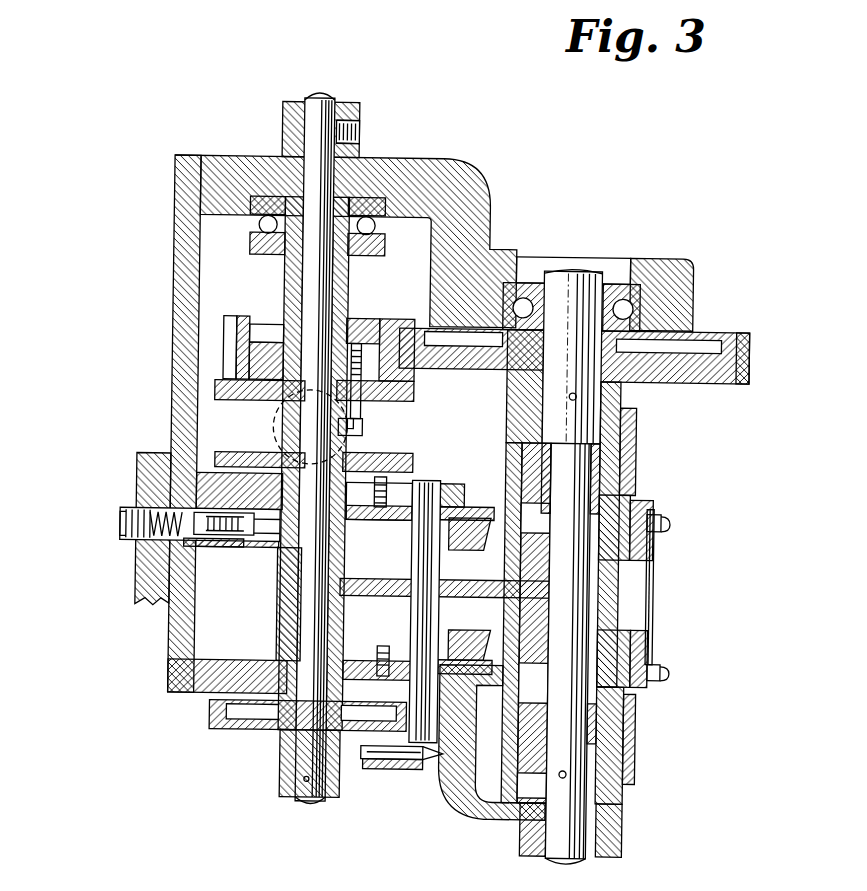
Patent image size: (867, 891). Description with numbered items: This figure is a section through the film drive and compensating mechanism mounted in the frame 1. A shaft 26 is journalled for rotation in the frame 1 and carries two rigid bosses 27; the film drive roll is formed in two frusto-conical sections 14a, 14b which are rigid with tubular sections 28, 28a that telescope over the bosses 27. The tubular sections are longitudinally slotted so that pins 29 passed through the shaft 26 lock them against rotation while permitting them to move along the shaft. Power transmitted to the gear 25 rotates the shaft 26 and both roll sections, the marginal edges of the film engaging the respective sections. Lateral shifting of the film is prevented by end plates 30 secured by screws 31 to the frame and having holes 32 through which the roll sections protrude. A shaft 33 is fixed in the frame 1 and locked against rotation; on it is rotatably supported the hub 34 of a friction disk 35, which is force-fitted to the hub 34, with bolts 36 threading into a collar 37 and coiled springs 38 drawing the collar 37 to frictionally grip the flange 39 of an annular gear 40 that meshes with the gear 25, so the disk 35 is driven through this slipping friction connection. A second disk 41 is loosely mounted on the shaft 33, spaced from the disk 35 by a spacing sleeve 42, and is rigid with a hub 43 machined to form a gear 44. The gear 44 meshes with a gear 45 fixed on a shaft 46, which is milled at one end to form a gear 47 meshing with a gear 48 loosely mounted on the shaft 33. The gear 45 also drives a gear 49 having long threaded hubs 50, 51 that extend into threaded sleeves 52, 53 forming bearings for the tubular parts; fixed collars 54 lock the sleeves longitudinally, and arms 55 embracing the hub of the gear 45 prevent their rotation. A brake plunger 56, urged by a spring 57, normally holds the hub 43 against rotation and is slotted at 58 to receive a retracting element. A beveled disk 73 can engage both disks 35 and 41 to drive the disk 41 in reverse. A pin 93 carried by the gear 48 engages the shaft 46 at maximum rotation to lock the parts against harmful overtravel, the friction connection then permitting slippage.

The frame 1 is at (455, 160).
The film drive roll section 14a is at (652, 500).
The film drive roll section 14b is at (648, 652).
The gear 25 is at (753, 378).
The shaft 26 is at (572, 270).
The boss 27 is at (628, 410).
The tubular section 28 is at (636, 455).
The tubular section 28a is at (640, 722).
The pin 29 is at (574, 397).
The end plate 30 is at (672, 509).
The screw 31 is at (395, 462).
The hole 32 is at (657, 512).
The shaft 33 is at (333, 93).
The hub 34 is at (345, 292).
The friction disk 35 is at (400, 404).
The bolt 36 is at (366, 318).
The collar 37 is at (275, 318).
The coiled spring 38 is at (365, 427).
The flange 39 is at (401, 338).
The annular gear 40 is at (240, 310).
The second disk 41 is at (222, 448).
The spacing sleeve 42 is at (295, 416).
The hub 43 is at (357, 520).
The gear 44 is at (283, 600).
The gear 45 is at (385, 579).
The shaft 46 is at (437, 480).
The gear 47 is at (440, 762).
The gear 48 is at (225, 735).
The gear 49 is at (640, 588).
The threaded hub 50 is at (612, 446).
The threaded hub 51 is at (628, 740).
The threaded sleeve 52 is at (628, 498).
The threaded sleeve 53 is at (634, 698).
The fixed collar 54 is at (515, 455).
The arm 55 is at (480, 552).
The brake plunger 56 is at (215, 545).
The spring 57 is at (135, 545).
The slot 58 is at (235, 548).
The beveled disk 73 is at (280, 438).
The pin 93 is at (395, 770).